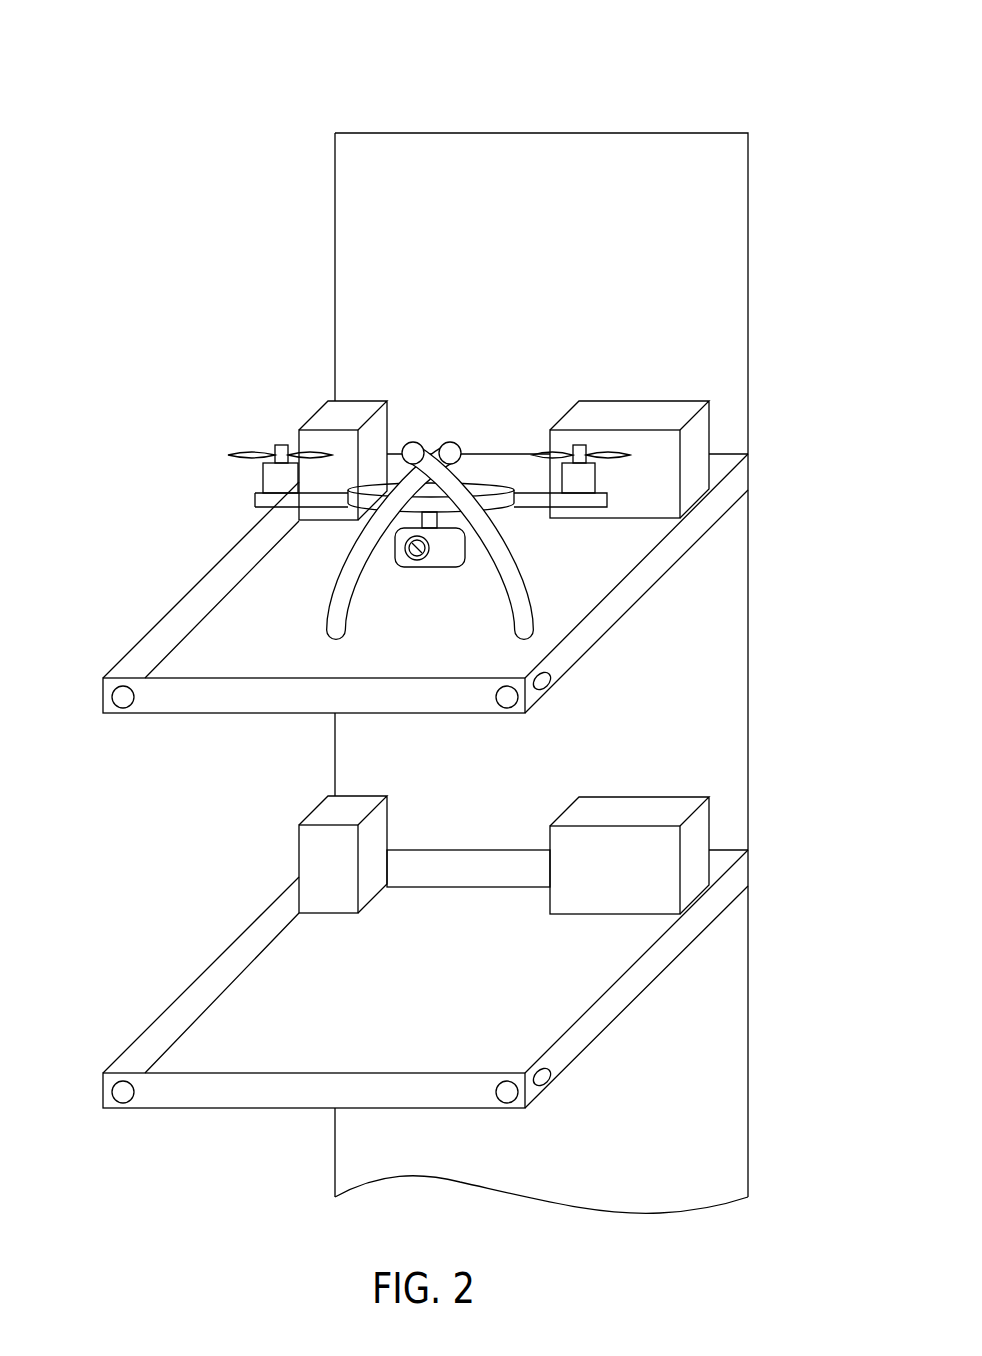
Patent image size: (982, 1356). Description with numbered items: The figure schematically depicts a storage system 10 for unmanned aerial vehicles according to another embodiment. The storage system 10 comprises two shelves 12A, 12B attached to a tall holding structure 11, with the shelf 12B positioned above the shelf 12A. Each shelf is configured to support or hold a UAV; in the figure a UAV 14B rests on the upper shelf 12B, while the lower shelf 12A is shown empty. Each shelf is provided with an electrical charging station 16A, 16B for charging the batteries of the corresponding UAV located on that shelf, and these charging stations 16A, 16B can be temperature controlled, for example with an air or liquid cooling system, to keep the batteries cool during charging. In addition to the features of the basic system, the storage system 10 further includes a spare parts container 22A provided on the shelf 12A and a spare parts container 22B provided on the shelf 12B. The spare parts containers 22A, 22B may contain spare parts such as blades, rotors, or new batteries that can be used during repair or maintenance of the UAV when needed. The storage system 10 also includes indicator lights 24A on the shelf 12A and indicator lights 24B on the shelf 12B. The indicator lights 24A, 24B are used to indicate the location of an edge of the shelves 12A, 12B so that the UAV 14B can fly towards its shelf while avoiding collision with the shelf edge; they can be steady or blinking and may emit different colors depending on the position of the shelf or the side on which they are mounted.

The storage system 10 is at (740, 75).
The holding structure 11 is at (750, 172).
The shelf 12A is at (648, 968).
The shelf 12B is at (648, 572).
The UAV 14B is at (442, 463).
The electrical charging station 16A is at (693, 835).
The electrical charging station 16B is at (700, 423).
The spare parts container 22A is at (313, 877).
The spare parts container 22B is at (327, 415).
The indicator lights 24A is at (117, 1090).
The indicator lights 24B is at (117, 695).